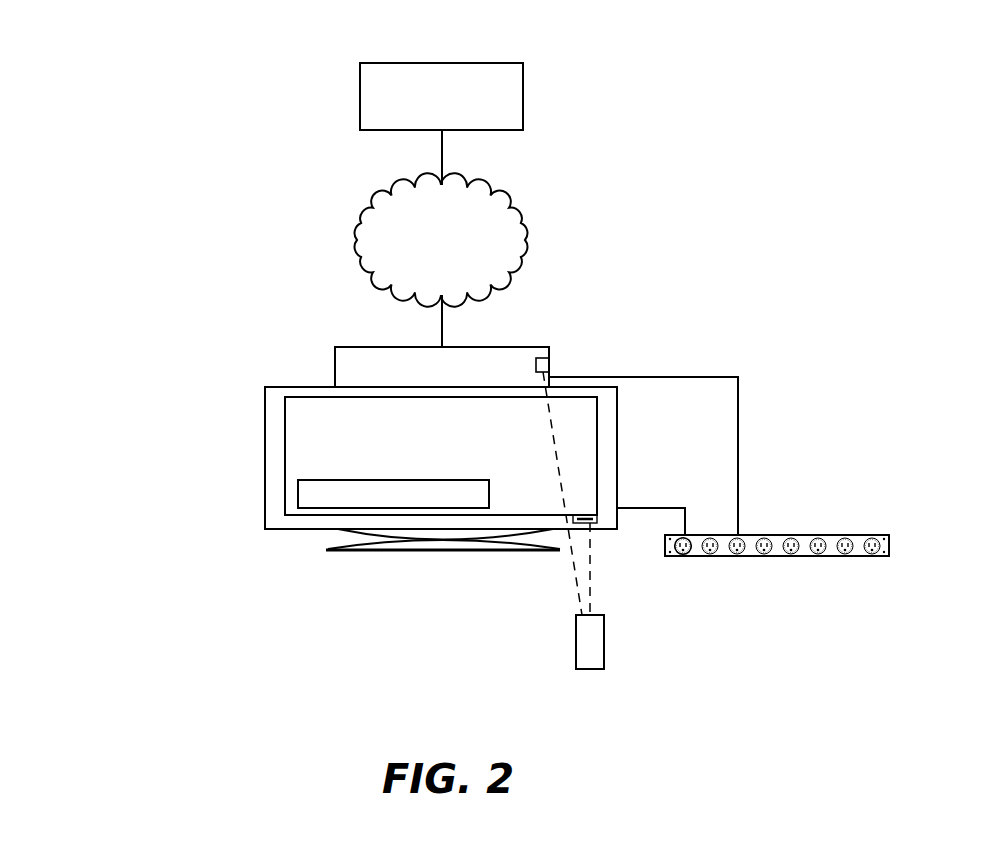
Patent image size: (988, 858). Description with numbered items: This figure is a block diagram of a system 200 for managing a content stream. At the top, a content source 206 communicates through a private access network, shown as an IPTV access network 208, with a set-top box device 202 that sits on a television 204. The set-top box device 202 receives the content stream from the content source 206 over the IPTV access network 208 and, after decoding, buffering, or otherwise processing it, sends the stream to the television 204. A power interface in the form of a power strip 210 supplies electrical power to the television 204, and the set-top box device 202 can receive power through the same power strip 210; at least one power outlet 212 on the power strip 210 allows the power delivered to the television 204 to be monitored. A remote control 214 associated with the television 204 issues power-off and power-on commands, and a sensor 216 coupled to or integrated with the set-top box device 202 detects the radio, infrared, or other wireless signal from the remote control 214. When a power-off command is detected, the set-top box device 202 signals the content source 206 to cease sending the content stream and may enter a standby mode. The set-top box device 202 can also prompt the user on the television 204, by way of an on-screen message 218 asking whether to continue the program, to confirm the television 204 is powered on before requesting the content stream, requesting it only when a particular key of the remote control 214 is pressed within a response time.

The system 200 is at (104, 89).
The set-top box device 202 is at (335, 365).
The television 204 is at (265, 430).
The content source 206 is at (360, 96).
The IPTV access network 208 is at (357, 237).
The power strip 210 is at (778, 535).
The power outlet 212 is at (690, 540).
The remote control 214 is at (605, 640).
The sensor 216 is at (541, 358).
The on-screen message 218 is at (386, 480).